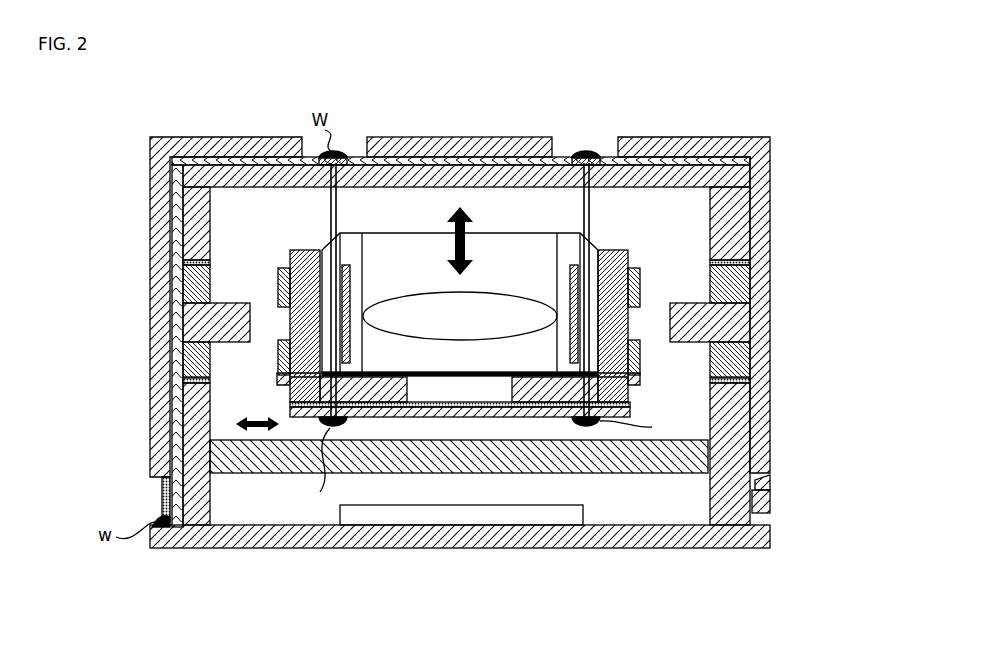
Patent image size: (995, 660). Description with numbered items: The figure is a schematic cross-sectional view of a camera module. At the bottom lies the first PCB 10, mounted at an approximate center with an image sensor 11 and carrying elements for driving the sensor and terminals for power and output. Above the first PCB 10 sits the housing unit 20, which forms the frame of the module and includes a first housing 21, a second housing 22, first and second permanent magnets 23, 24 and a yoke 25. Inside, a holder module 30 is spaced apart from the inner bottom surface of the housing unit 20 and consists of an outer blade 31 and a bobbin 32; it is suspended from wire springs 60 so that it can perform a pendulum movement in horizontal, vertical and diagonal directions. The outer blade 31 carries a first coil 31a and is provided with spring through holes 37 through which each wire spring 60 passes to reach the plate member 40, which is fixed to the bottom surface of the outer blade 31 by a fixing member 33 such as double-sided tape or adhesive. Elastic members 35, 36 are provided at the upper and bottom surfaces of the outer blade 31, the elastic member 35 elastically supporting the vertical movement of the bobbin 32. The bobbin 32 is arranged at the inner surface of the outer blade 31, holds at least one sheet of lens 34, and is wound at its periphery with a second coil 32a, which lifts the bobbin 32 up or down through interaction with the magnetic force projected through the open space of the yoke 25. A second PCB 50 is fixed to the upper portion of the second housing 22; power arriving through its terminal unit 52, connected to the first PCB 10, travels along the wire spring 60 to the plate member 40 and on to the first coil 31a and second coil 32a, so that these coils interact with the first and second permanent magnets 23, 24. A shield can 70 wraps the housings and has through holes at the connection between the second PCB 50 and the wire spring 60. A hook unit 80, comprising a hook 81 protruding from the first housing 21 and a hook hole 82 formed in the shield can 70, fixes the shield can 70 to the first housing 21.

The first PCB 10 is at (542, 547).
The image sensor 11 is at (478, 515).
The housing unit 20 is at (80, 212).
The first housing 21 is at (193, 387).
The second housing 22 is at (197, 215).
The first permanent magnet 23 is at (187, 343).
The second permanent magnet 24 is at (193, 263).
The yoke 25 is at (200, 305).
The holder module 30 is at (532, 373).
The outer blade 31 is at (320, 388).
The first coil 31a is at (287, 270).
The bobbin 32 is at (360, 262).
The second coil 32a is at (350, 343).
The fixing member 33 is at (300, 412).
The lens 34 is at (500, 305).
The elastic member 35 is at (322, 244).
The elastic member 36 is at (583, 365).
The spring through hole 37 is at (712, 410).
The plate member 40 is at (397, 417).
The second PCB 50 is at (202, 158).
The terminal unit 52 is at (164, 492).
The wire spring 60 is at (336, 212).
The shield can 70 is at (150, 141).
The hook unit 80 is at (830, 470).
The hook 81 is at (766, 498).
The hook hole 82 is at (760, 484).